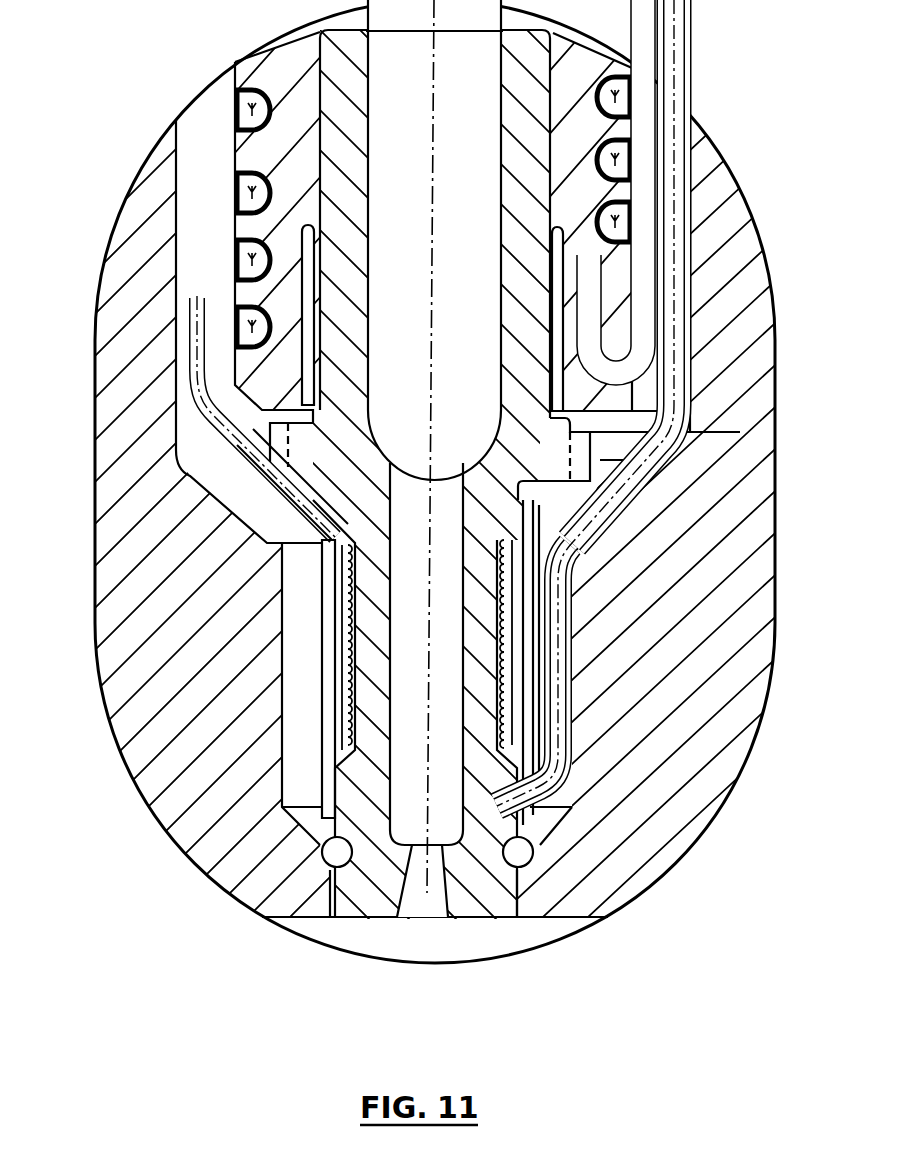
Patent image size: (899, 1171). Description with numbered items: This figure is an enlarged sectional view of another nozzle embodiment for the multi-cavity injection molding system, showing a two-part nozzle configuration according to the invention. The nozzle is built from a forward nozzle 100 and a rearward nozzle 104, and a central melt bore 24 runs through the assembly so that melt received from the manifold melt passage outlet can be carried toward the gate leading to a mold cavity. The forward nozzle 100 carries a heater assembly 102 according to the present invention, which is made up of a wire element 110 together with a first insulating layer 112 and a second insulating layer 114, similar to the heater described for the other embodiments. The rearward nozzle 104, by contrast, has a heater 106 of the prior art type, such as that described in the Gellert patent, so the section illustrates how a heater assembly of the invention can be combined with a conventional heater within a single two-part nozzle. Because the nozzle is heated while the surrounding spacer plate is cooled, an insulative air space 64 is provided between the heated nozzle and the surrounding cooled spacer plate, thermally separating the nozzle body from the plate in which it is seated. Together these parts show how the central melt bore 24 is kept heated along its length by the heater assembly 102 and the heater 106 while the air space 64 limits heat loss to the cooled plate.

The central melt bore 24 is at (463, 423).
The insulative air space 64 is at (235, 488).
The forward nozzle 100 is at (500, 530).
The heater assembly 102 is at (507, 640).
The rearward nozzle 104 is at (597, 198).
The heater 106 is at (623, 227).
The wire element 110 is at (508, 670).
The first insulating layer 112 is at (502, 703).
The second insulating layer 114 is at (513, 733).